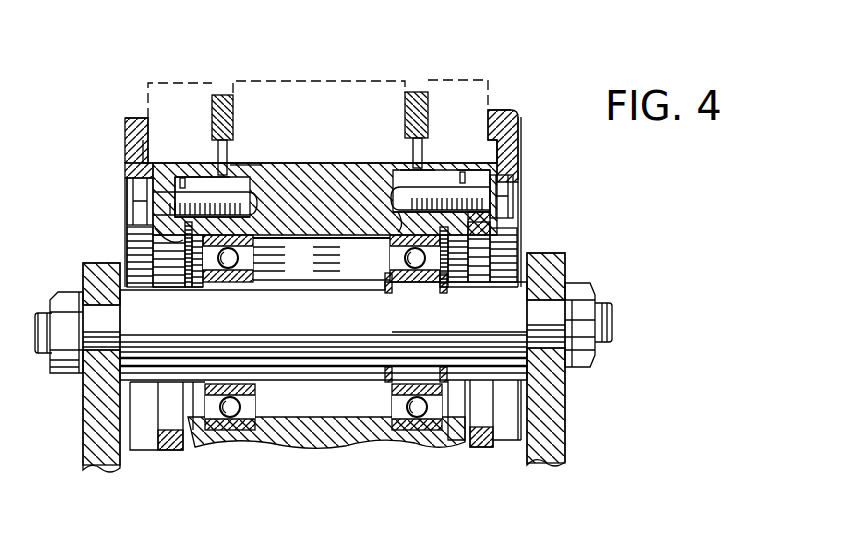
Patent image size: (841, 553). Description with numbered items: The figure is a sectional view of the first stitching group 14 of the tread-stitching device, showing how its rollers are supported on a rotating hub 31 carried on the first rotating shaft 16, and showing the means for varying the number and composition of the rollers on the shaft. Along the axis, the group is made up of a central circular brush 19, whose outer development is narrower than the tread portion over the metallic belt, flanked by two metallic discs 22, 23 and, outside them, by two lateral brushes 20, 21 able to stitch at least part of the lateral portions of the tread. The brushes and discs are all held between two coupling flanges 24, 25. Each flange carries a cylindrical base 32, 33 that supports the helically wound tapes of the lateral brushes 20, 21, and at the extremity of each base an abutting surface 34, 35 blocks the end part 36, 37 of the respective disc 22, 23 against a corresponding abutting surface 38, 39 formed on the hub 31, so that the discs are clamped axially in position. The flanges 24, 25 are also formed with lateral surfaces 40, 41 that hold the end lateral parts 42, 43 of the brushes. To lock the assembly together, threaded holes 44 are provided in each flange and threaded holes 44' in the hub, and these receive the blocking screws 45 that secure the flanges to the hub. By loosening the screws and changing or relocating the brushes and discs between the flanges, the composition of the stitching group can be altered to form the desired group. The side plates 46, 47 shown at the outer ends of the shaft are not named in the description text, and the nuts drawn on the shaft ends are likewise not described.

The first stitching group 14 is at (121, 117).
The first rotating shaft 16 is at (330, 378).
The central circular brush 19 is at (342, 87).
The lateral brush 20 is at (170, 86).
The lateral brush 21 is at (463, 81).
The metallic disc 22 is at (223, 93).
The metallic disc 23 is at (418, 91).
The coupling flange 24 is at (152, 163).
The coupling flange 25 is at (518, 127).
The hub 31 is at (330, 240).
The cylindrical base 32 is at (212, 161).
The cylindrical base 33 is at (430, 159).
The abutting surface 34 is at (256, 181).
The abutting surface 35 is at (410, 172).
The end part of disc 36 is at (226, 157).
The end part of disc 37 is at (412, 161).
The abutting surface of hub 38 is at (240, 163).
The abutting surface of hub 39 is at (420, 169).
The lateral surface 40 is at (146, 117).
The lateral surface 41 is at (497, 112).
The end lateral part of brush 42 is at (146, 153).
The end lateral part of brush 43 is at (512, 152).
The threaded hole 44 is at (321, 251).
The threaded hole 44' is at (278, 241).
The blocking screw 45 is at (140, 194).
The left fork plate 46 is at (86, 430).
The right fork plate 47 is at (563, 424).